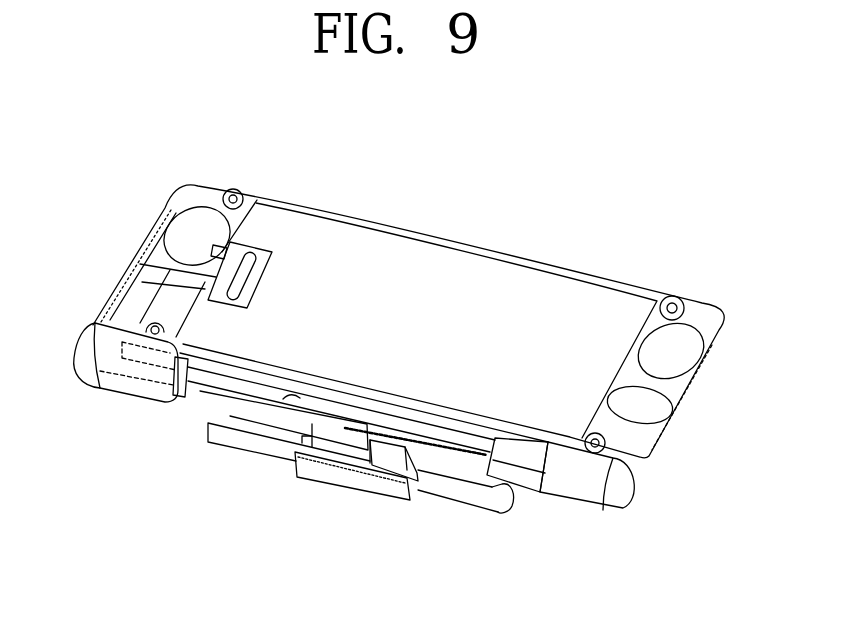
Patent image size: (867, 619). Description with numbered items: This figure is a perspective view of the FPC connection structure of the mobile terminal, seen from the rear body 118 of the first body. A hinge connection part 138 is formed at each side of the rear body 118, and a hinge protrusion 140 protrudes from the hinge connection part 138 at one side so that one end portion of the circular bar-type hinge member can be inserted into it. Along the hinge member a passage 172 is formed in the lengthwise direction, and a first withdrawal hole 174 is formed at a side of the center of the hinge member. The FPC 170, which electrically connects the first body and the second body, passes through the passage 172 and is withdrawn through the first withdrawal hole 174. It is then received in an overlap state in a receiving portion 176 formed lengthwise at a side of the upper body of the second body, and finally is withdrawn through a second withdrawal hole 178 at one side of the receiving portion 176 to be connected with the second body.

The rear body 118 is at (444, 258).
The hinge connection part 138 is at (118, 386).
The hinge protrusion 140 is at (160, 393).
The FPC 170 is at (205, 390).
The passage 172 is at (288, 398).
The first withdrawal hole 174 is at (373, 475).
The receiving portion 176 is at (323, 480).
The second withdrawal hole 178 is at (512, 505).